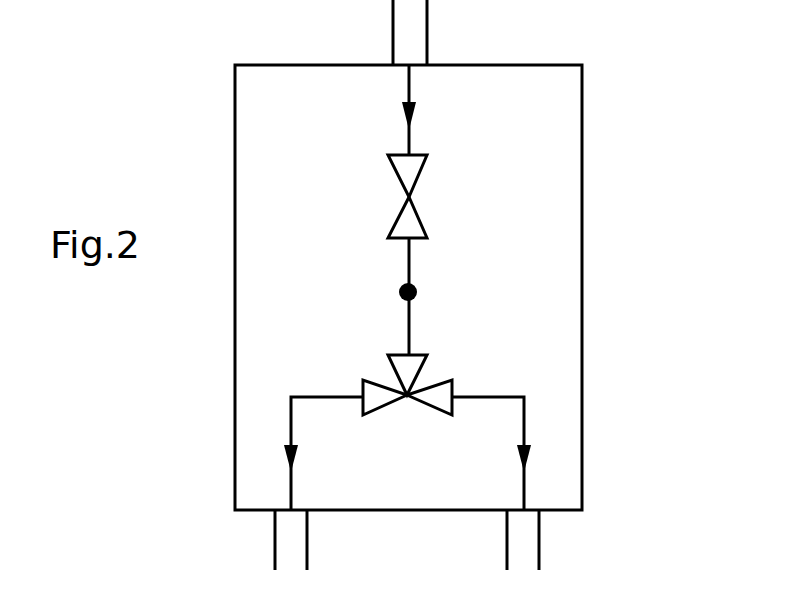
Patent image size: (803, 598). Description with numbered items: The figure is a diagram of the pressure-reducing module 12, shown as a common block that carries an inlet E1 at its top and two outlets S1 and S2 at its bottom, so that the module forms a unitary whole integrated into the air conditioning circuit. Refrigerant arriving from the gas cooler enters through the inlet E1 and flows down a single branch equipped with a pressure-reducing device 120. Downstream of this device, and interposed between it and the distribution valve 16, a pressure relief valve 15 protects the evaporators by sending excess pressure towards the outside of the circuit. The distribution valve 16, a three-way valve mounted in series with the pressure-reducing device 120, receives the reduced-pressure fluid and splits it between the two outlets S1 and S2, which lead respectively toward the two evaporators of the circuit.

The pressure-reducing module 12 is at (590, 210).
The pressure-reducing device 120 is at (420, 200).
The pressure relief valve 15 is at (400, 290).
The distribution valve 16 is at (420, 350).
The inlet E1 is at (391, 27).
The outlet S1 is at (273, 560).
The outlet S2 is at (540, 533).